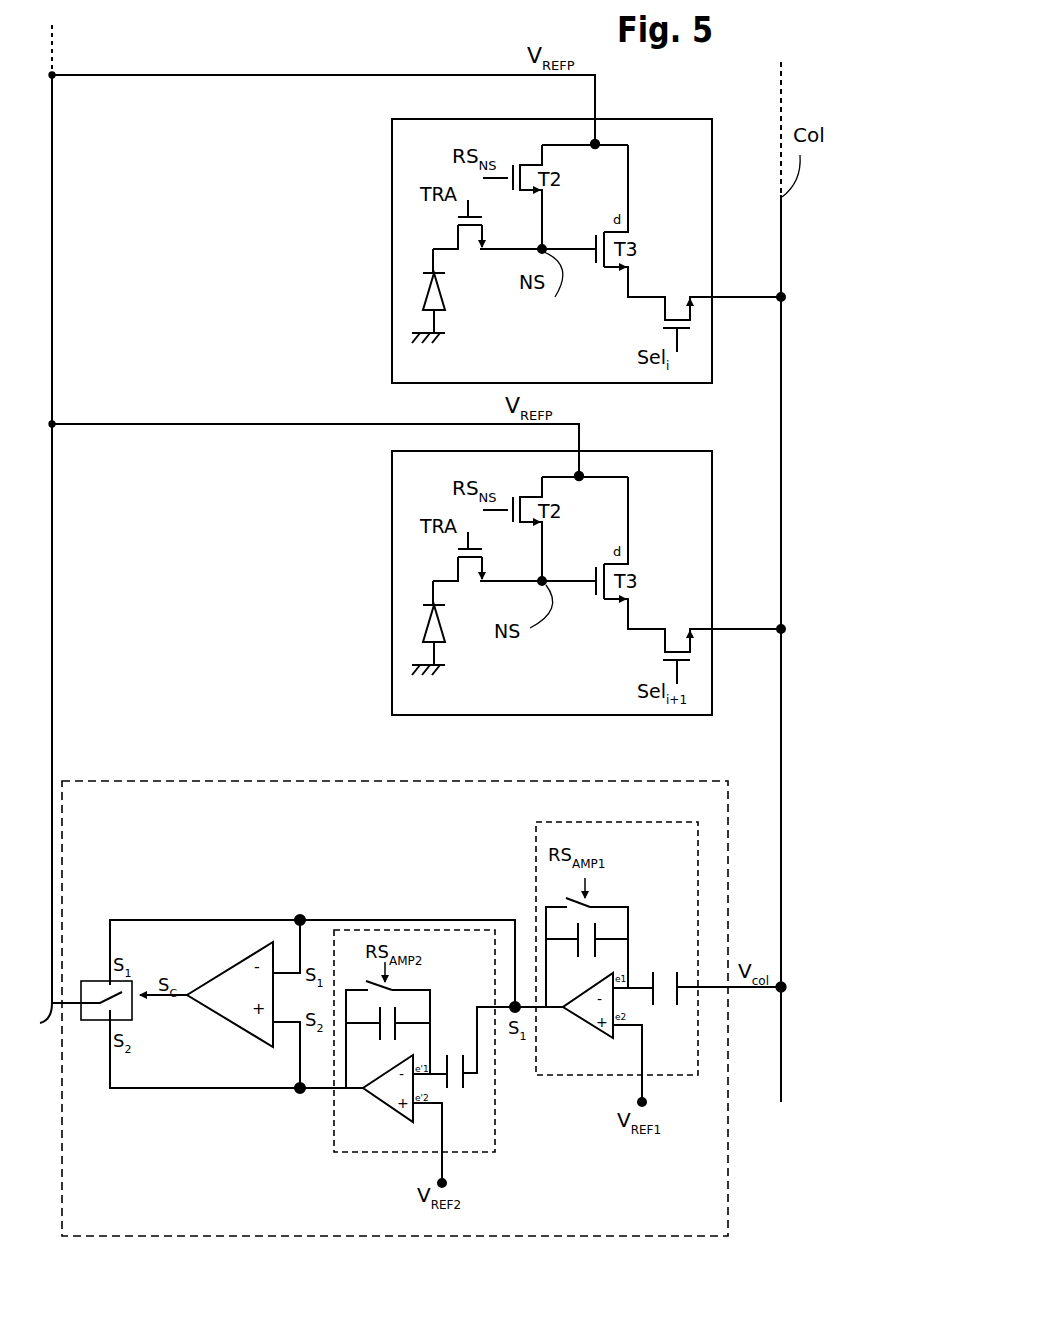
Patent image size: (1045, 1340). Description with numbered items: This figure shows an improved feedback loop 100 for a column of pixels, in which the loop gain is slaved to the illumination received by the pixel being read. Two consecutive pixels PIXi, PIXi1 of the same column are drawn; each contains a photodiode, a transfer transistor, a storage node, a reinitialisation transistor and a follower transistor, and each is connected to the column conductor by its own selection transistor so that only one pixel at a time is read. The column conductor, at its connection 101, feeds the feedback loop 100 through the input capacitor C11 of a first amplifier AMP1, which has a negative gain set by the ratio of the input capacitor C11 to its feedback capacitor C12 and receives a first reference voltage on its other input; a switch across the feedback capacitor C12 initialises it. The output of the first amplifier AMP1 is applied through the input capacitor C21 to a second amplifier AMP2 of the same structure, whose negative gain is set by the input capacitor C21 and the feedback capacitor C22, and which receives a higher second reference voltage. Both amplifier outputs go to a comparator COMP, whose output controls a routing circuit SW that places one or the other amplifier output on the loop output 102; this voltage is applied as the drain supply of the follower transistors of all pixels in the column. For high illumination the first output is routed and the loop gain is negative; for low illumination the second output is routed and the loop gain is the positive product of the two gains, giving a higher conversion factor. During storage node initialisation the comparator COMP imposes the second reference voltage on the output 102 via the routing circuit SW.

The feedback loop 100 is at (250, 781).
The column output node 101 is at (727, 990).
The output of the feedback loop 102 is at (29, 1027).
The pixel PIXi is at (372, 228).
The pixel PIXi1 is at (372, 535).
The comparator COMP is at (222, 976).
The routing circuit SW is at (88, 981).
The first amplifier AMP1 is at (536, 830).
The second amplifier AMP2 is at (334, 1151).
The input capacitor C11 is at (714, 978).
The feedback capacitor C12 is at (587, 942).
The input capacitor C21 is at (475, 1047).
The feedback capacitor C22 is at (388, 1025).